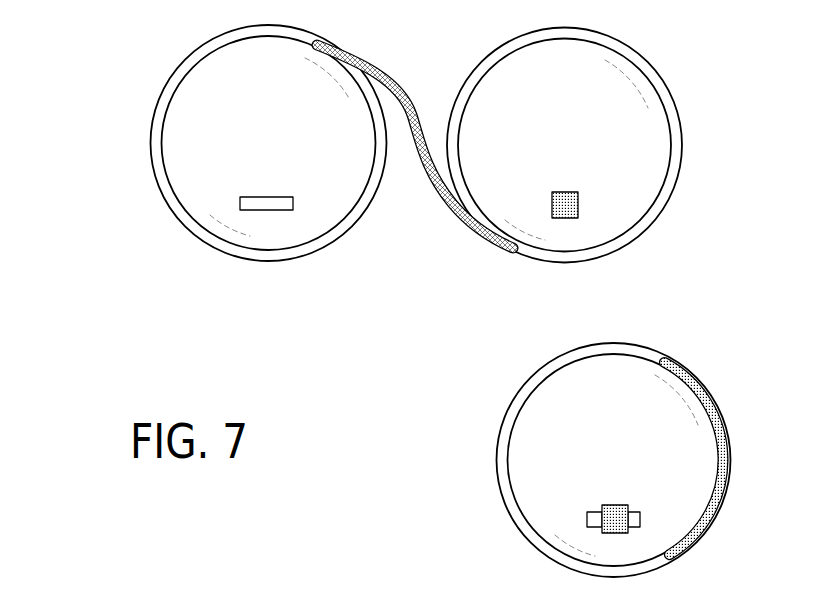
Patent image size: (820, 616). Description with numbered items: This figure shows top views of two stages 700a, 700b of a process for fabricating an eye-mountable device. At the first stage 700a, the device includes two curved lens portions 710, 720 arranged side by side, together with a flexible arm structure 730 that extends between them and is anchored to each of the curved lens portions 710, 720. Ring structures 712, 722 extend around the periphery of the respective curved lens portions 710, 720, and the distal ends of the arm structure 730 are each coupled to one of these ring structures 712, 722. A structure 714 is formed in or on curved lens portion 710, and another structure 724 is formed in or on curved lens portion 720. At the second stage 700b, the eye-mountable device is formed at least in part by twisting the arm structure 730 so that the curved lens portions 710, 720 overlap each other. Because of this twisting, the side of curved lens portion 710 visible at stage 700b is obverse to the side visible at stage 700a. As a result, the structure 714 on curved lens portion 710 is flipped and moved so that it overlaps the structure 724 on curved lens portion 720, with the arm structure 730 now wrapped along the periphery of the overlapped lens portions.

The first processing stage 700a is at (50, 90).
The second processing stage 700b is at (771, 402).
The curved lens portion 710 is at (589, 303).
The ring structure 712 is at (679, 200).
The structure 714 is at (590, 193).
The curved lens portion 720 is at (269, 143).
The ring structure 722 is at (152, 198).
The structure 724 is at (229, 200).
The flexible arm structure 730 is at (376, 54).